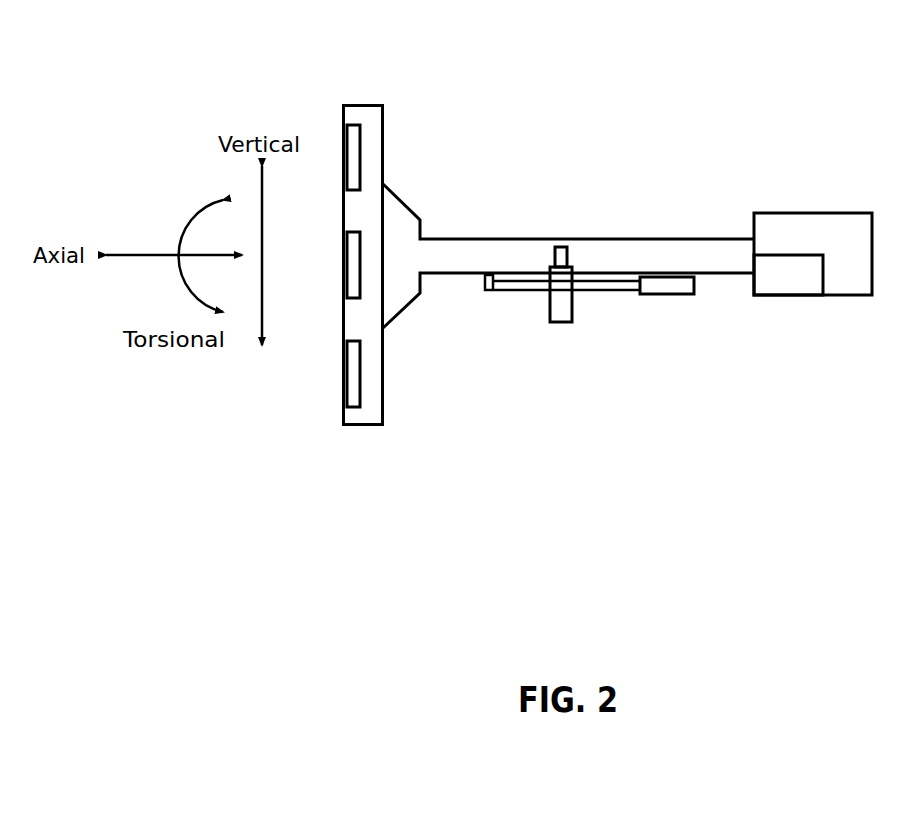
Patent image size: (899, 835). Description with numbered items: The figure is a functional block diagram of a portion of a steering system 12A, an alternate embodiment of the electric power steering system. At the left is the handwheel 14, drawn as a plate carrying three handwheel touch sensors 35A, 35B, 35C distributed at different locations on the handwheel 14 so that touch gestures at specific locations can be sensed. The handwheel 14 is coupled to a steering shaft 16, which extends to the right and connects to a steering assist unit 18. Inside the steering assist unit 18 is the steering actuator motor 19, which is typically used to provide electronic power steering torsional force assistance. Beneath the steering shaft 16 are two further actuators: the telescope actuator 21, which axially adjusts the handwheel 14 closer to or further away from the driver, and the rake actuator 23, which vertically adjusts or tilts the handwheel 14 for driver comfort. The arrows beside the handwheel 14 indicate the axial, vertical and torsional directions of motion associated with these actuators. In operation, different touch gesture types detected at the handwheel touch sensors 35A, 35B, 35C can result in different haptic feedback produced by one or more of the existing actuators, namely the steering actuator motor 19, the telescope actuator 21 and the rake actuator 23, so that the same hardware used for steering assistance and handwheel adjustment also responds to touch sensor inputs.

The steering system 12A is at (585, 72).
The handwheel 14 is at (362, 104).
The steering shaft 16 is at (505, 238).
The steering assist unit 18 is at (815, 212).
The steering actuator motor 19 is at (788, 275).
The telescope actuator 21 is at (670, 295).
The rake actuator 23 is at (558, 322).
The handwheel touch sensor 35A is at (343, 151).
The handwheel touch sensor 35B is at (343, 265).
The handwheel touch sensor 35C is at (343, 374).